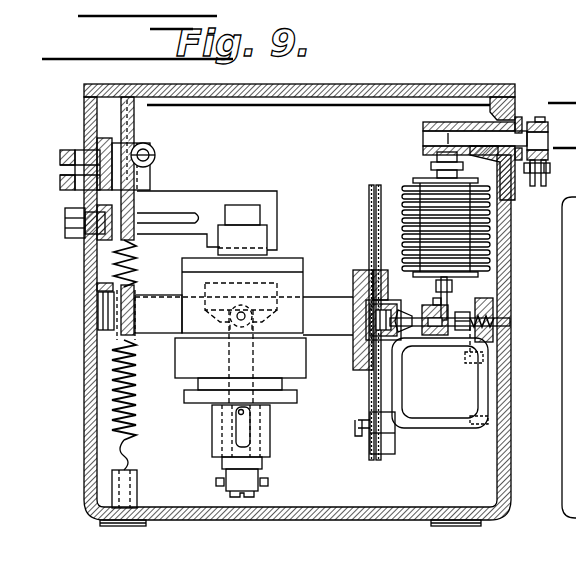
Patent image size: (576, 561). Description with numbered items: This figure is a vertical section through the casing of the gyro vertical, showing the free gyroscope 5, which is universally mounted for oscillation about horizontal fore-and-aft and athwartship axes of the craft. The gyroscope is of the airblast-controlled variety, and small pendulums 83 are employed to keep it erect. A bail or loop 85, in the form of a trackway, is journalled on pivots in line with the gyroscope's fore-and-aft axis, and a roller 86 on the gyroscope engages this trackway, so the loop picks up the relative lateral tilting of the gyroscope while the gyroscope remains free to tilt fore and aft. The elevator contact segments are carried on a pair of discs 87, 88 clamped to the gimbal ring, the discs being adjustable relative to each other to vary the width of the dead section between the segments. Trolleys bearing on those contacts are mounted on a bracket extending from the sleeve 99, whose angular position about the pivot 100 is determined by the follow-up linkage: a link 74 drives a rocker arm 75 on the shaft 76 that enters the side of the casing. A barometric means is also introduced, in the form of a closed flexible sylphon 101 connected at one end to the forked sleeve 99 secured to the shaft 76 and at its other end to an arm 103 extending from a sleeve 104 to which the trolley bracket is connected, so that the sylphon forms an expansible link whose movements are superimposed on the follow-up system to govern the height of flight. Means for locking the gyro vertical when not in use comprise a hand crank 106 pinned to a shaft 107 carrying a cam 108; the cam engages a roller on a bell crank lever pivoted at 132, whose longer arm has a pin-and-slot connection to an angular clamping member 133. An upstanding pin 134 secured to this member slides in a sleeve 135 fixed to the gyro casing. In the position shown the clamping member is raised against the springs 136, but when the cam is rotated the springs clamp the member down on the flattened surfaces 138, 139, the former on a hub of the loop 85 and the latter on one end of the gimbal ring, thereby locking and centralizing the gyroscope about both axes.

The free gyroscope 5 is at (300, 318).
The link 74 is at (548, 168).
The rocker arm 75 is at (530, 183).
The shaft 76 is at (535, 140).
The pendulums 83 is at (243, 435).
The bail or loop 85 is at (226, 488).
The roller 86 is at (259, 488).
The disc 87 is at (373, 203).
The disc 88 is at (368, 384).
The sleeve 99 is at (428, 127).
The pivot 100 is at (417, 328).
The sylphon 101 is at (408, 188).
The arm 103 is at (453, 300).
The sleeve 104 is at (443, 337).
The hand crank 106 is at (66, 222).
The shaft 107 is at (64, 167).
The cam 108 is at (118, 138).
The pivot 132 is at (88, 250).
The angular clamping member 133 is at (224, 197).
The upstanding pin 134 is at (134, 186).
The sleeve 135 is at (121, 216).
The springs 136 is at (136, 412).
The flattened surface 138 is at (264, 285).
The flattened surface 139 is at (137, 281).